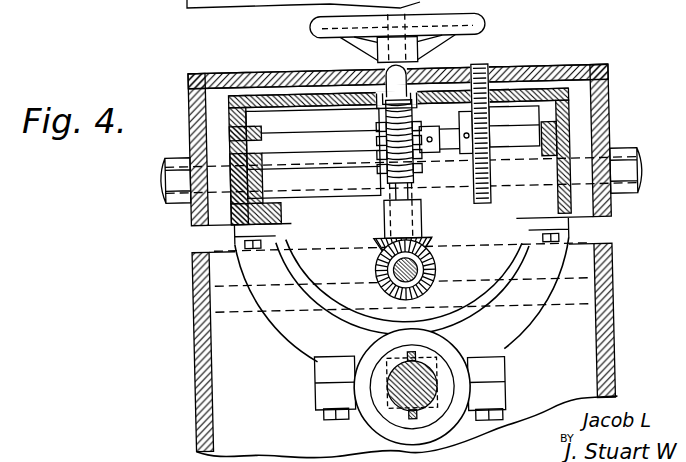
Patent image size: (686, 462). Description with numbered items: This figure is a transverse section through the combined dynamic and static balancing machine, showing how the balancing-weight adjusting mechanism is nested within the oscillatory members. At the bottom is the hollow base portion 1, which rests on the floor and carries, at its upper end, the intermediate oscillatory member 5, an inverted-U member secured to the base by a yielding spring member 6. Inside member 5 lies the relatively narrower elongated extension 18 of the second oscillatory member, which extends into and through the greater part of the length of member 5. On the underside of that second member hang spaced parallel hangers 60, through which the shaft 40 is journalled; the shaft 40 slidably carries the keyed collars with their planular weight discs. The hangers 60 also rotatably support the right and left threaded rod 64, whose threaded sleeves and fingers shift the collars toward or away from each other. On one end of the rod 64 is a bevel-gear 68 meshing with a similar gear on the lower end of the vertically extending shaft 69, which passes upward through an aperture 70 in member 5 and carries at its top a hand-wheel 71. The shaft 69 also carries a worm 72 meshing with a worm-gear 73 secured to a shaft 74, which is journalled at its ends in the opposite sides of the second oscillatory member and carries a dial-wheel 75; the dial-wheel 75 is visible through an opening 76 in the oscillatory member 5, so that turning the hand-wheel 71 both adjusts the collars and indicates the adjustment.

The hollow base portion 1 is at (610, 353).
The intermediate oscillatory member 5 is at (610, 80).
The yielding spring member 6 is at (610, 232).
The elongated extension 18 is at (539, 95).
The shaft 40 is at (384, 402).
The hangers 60 is at (517, 327).
The right and left threaded rod 64 is at (420, 267).
The bevel-gear 68 is at (376, 252).
The vertically extending shaft 69 is at (380, 236).
The aperture 70 is at (390, 66).
The hand-wheel 71 is at (481, 28).
The worm 72 is at (381, 121).
The worm-gear 73 is at (387, 172).
The shaft 74 is at (313, 145).
The dial-wheel 75 is at (491, 120).
The opening 76 is at (492, 71).